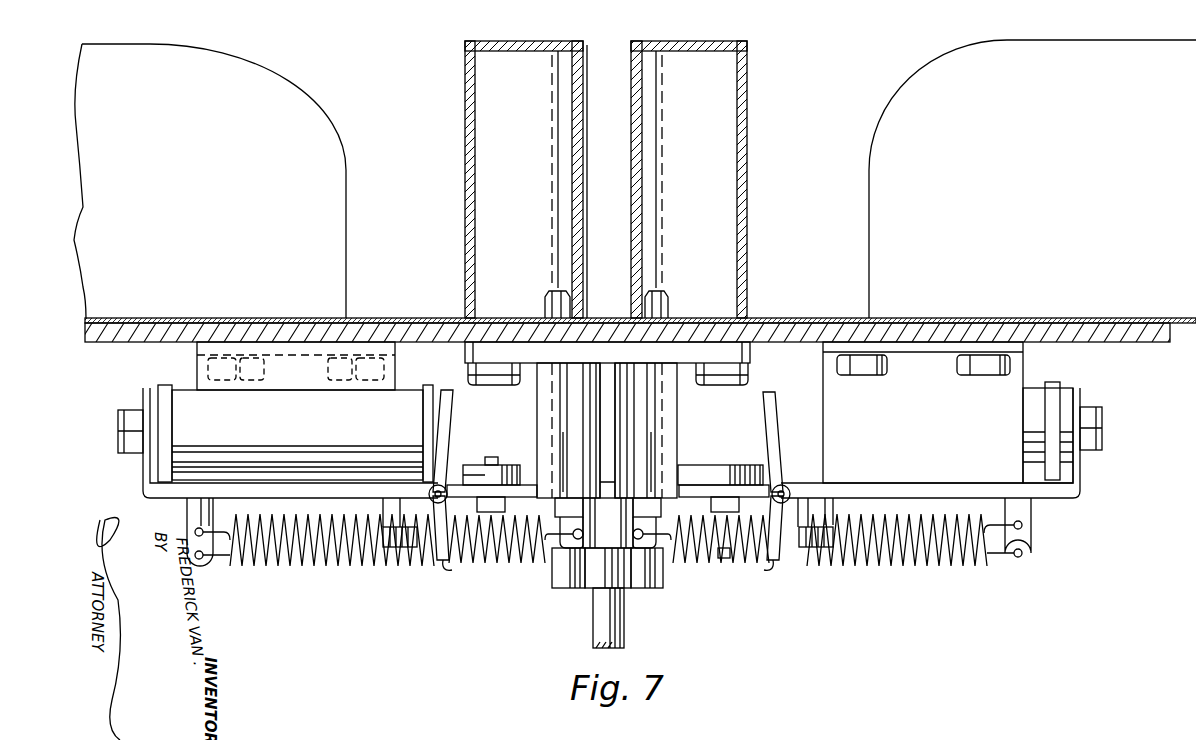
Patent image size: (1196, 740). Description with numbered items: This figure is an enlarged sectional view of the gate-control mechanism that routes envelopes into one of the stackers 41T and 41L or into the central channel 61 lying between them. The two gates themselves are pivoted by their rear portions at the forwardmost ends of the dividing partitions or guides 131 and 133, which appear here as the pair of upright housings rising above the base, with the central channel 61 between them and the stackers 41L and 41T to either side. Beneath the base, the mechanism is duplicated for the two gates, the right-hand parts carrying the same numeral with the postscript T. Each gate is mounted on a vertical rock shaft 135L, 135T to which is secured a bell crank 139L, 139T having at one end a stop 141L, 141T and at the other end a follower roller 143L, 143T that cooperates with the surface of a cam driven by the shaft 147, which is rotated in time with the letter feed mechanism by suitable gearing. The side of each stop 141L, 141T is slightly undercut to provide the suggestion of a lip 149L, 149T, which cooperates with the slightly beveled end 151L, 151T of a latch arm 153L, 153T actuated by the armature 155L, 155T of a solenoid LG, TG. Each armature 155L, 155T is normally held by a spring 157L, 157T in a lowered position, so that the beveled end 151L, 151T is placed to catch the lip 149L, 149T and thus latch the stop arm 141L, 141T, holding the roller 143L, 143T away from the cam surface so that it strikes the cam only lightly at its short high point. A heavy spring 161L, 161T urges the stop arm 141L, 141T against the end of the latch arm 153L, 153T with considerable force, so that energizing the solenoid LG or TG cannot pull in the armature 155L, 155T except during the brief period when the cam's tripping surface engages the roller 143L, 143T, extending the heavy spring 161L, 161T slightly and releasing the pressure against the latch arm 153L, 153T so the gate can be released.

The stacker 41L is at (310, 144).
The stacker 41T is at (954, 120).
The central channel 61 is at (608, 69).
The dividing partition or guide 131 is at (465, 73).
The dividing partition or guide 133 is at (747, 72).
The solenoid LG is at (186, 398).
The solenoid TG is at (1035, 395).
The vertical rock shaft 135L is at (567, 583).
The vertical rock shaft 135T is at (650, 585).
The bell crank 139L is at (499, 497).
The bell crank 139T is at (717, 497).
The stop 141L is at (576, 508).
The stop 141T is at (639, 539).
The follower roller 143L is at (466, 470).
The follower roller 143T is at (725, 560).
The shaft 147 is at (607, 626).
The lip 149L is at (572, 494).
The lip 149T is at (643, 497).
The beveled end 151L is at (562, 492).
The beveled end 151T is at (653, 497).
The latch arm 153L is at (492, 512).
The latch arm 153T is at (742, 488).
The armature 155L is at (447, 412).
The armature 155T is at (771, 392).
The spring 157L is at (282, 569).
The spring 157T is at (897, 567).
The heavy spring 161L is at (213, 517).
The heavy spring 161T is at (978, 526).